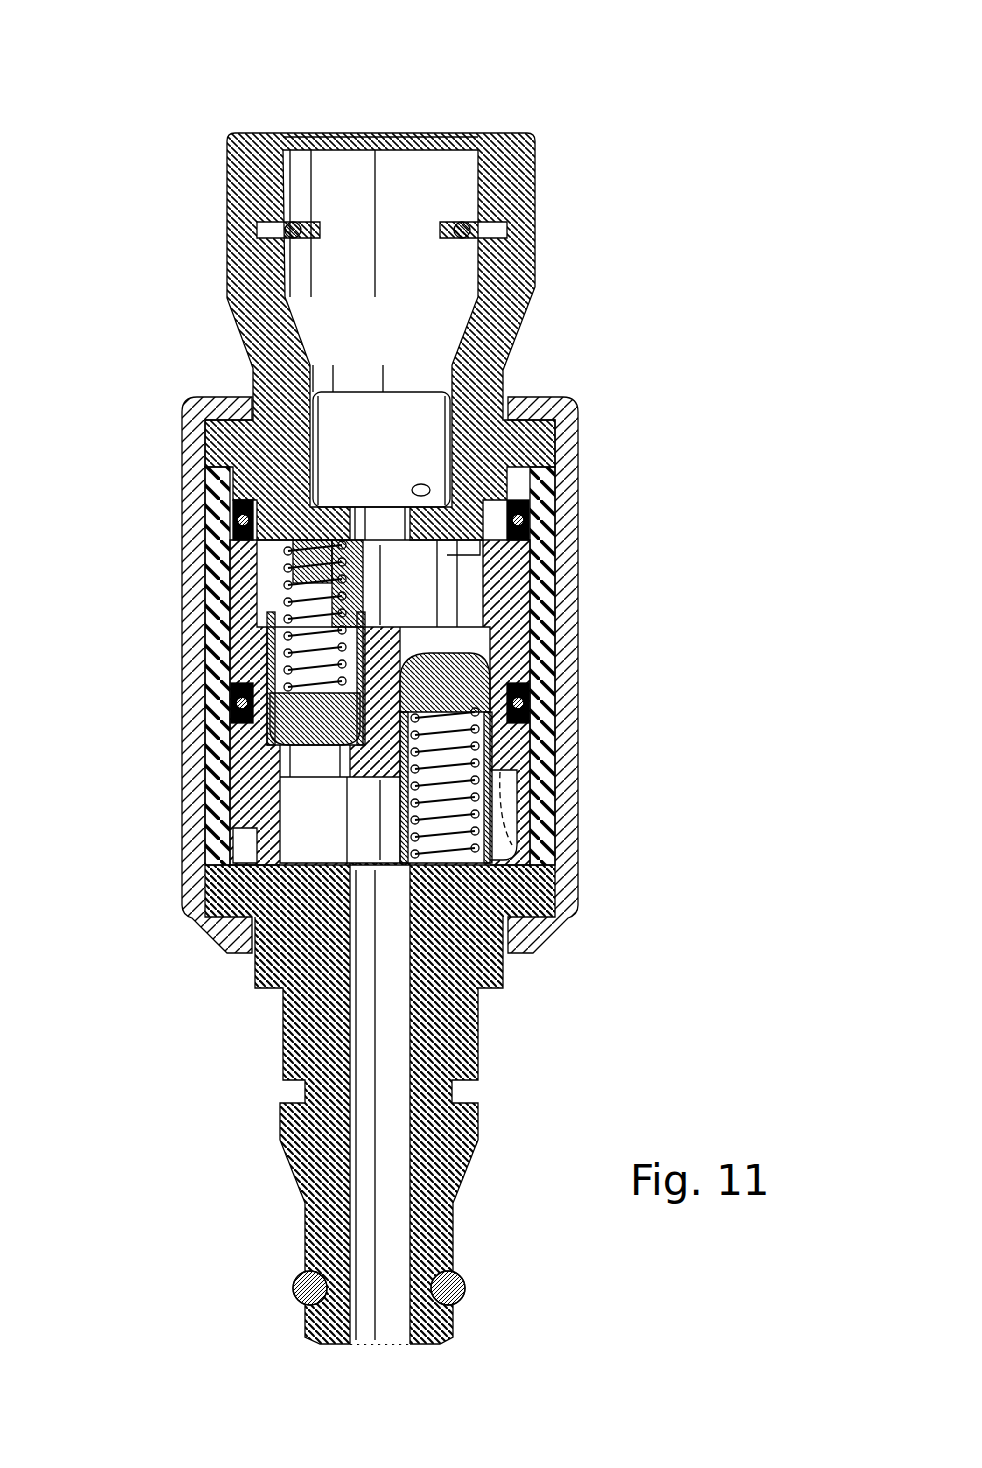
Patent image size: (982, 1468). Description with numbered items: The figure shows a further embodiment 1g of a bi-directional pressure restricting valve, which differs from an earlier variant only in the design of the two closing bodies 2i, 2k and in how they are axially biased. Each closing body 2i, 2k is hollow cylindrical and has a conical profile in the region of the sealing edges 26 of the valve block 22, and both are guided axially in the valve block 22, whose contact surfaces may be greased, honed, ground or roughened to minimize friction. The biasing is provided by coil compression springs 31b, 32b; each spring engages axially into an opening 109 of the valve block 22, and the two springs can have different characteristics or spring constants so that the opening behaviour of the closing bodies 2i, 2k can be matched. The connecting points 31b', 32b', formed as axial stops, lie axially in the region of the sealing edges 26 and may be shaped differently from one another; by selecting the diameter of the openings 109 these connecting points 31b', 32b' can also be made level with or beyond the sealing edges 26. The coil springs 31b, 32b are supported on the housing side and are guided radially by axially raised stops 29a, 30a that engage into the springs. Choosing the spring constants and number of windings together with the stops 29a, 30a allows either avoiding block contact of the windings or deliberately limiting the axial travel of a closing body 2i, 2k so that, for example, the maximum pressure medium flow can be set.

The damping device 1g is at (556, 61).
The axially raised stop 30a is at (290, 553).
The coil compression spring 31b is at (215, 616).
The opening 109 is at (235, 652).
The connecting point 31b' is at (222, 678).
The closing body 2i is at (300, 713).
The sealing edge 26 is at (300, 742).
The valve block 22 is at (533, 615).
The closing body 2k is at (527, 682).
The connecting point 32b' is at (541, 697).
The coil compression spring 32b is at (540, 785).
The axially raised stop 29a is at (553, 858).